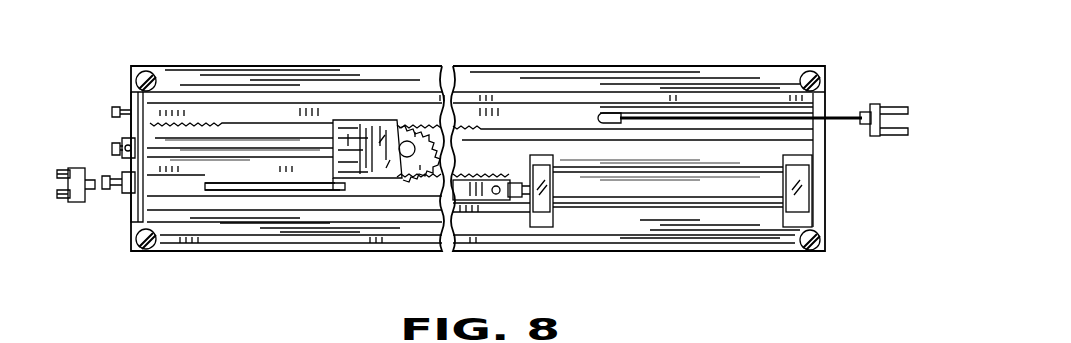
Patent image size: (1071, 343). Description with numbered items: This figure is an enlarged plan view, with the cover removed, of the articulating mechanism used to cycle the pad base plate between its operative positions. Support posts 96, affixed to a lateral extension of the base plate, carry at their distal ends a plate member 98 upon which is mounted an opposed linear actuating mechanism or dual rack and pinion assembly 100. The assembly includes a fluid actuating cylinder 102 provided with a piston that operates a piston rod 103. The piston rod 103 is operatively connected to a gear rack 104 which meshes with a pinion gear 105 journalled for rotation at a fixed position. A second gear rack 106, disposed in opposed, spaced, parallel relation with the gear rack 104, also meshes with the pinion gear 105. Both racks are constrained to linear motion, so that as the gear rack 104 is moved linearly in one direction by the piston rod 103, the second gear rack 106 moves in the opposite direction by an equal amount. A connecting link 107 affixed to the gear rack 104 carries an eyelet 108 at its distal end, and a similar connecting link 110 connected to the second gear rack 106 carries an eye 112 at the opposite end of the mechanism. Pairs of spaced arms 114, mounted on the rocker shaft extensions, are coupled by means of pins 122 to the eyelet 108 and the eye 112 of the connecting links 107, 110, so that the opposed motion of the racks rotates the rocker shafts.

The support posts 96 is at (146, 71).
The plate member 98 is at (692, 246).
The dual rack and pinion assembly 100 is at (642, 64).
The fluid actuating cylinder 102 is at (590, 198).
The piston rod 103 is at (511, 203).
The gear rack 104 is at (421, 194).
The pinion gear 105 is at (406, 140).
The second gear rack 106 is at (528, 125).
The connecting link 107 is at (325, 196).
The eyelet 108 is at (78, 203).
The connecting link 110 is at (840, 116).
The eye 112 is at (868, 126).
The spaced arms 114 is at (895, 128).
The pins 122 is at (80, 167).